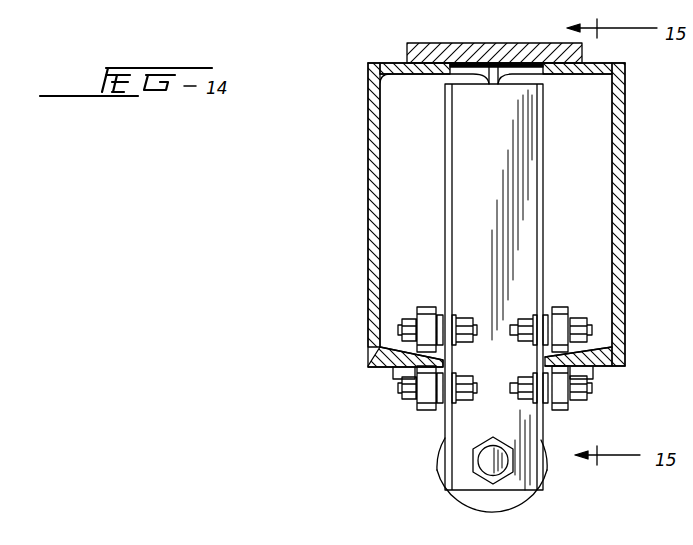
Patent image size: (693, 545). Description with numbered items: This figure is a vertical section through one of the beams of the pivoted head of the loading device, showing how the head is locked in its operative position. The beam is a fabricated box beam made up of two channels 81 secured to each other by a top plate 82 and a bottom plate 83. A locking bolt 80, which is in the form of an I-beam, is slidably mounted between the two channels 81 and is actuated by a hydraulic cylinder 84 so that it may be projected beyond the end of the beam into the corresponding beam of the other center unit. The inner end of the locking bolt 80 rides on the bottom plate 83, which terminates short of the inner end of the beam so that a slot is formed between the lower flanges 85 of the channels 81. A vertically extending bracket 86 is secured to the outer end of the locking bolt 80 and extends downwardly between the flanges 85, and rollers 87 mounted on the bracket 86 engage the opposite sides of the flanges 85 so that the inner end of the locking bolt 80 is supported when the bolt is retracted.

The locking bolt 80 is at (455, 72).
The channels 81 is at (368, 210).
The top plate 82 is at (403, 62).
The bottom plate 83 is at (592, 378).
The hydraulic cylinder 84 is at (513, 500).
The lower flanges 85 is at (393, 367).
The bracket 86 is at (492, 128).
The rollers 87 is at (426, 306).